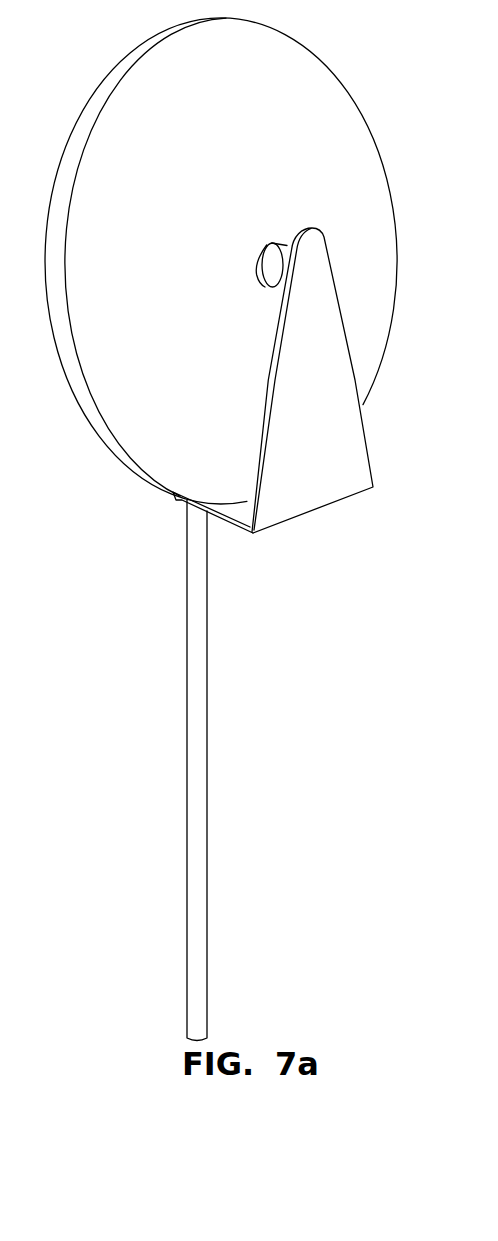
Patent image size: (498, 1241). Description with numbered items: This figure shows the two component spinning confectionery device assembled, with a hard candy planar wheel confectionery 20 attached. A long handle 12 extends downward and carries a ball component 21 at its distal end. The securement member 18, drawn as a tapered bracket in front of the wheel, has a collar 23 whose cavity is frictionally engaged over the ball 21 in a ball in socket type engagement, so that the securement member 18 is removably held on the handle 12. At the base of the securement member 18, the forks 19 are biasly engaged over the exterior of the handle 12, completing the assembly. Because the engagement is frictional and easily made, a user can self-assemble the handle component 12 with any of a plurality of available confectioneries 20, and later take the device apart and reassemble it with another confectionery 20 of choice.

The handle 12 is at (205, 582).
The securement member 18 is at (345, 433).
The forks 19 is at (202, 495).
The confectionery 20 is at (303, 157).
The ball component 21 is at (268, 243).
The collar 23 is at (278, 268).